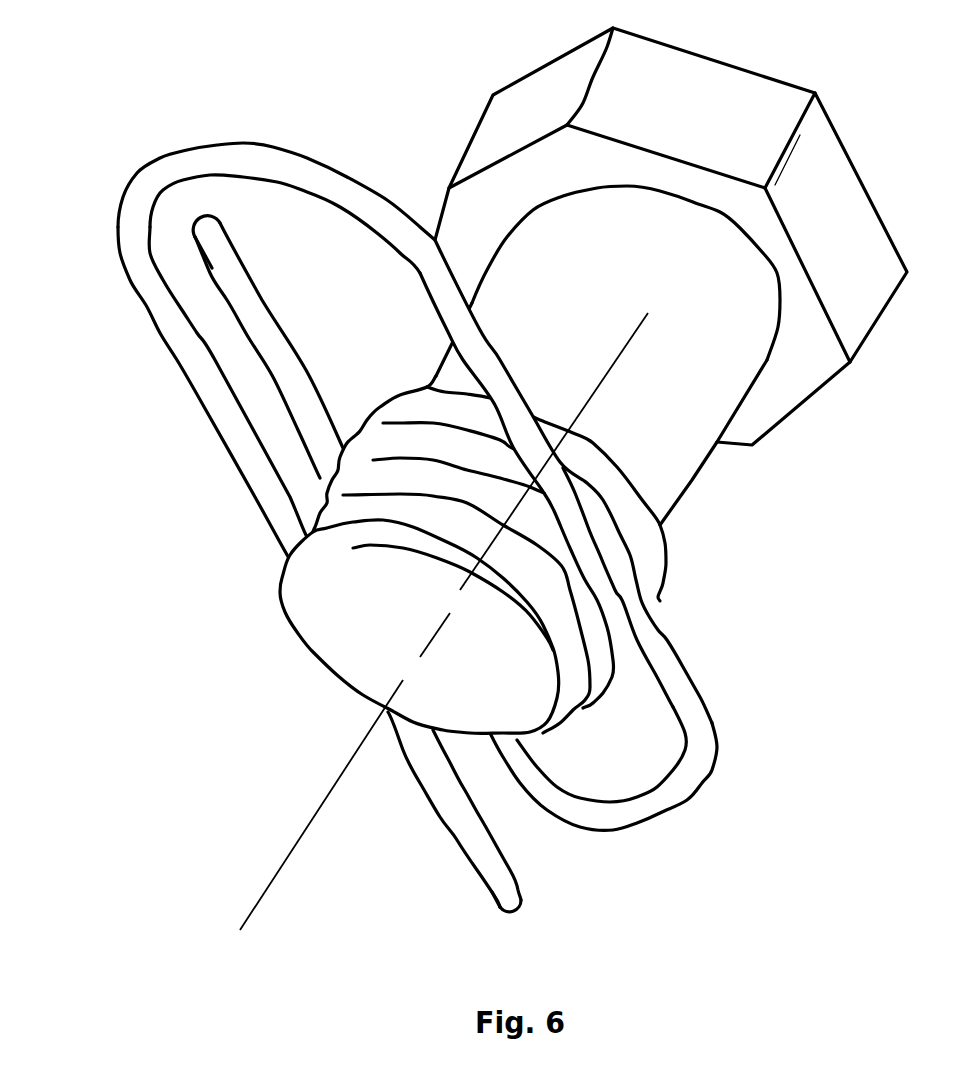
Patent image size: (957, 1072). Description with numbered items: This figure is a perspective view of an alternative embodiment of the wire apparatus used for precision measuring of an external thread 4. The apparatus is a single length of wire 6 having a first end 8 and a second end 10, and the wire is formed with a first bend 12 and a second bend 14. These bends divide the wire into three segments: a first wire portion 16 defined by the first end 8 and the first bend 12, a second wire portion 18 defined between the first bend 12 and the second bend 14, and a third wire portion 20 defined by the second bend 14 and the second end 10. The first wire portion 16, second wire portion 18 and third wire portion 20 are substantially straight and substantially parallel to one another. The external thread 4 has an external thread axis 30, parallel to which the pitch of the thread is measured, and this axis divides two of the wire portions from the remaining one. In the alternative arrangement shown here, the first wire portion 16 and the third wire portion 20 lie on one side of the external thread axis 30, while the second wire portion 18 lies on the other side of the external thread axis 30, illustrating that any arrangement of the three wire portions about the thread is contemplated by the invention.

The external thread 4 is at (292, 622).
The single length of wire 6 is at (426, 480).
The first end 8 is at (498, 905).
The second end 10 is at (220, 227).
The first bend 12 is at (156, 163).
The second bend 14 is at (670, 810).
The first wire portion 16 is at (205, 415).
The second wire portion 18 is at (670, 637).
The third wire portion 20 is at (357, 590).
The external thread axis 30 is at (292, 850).